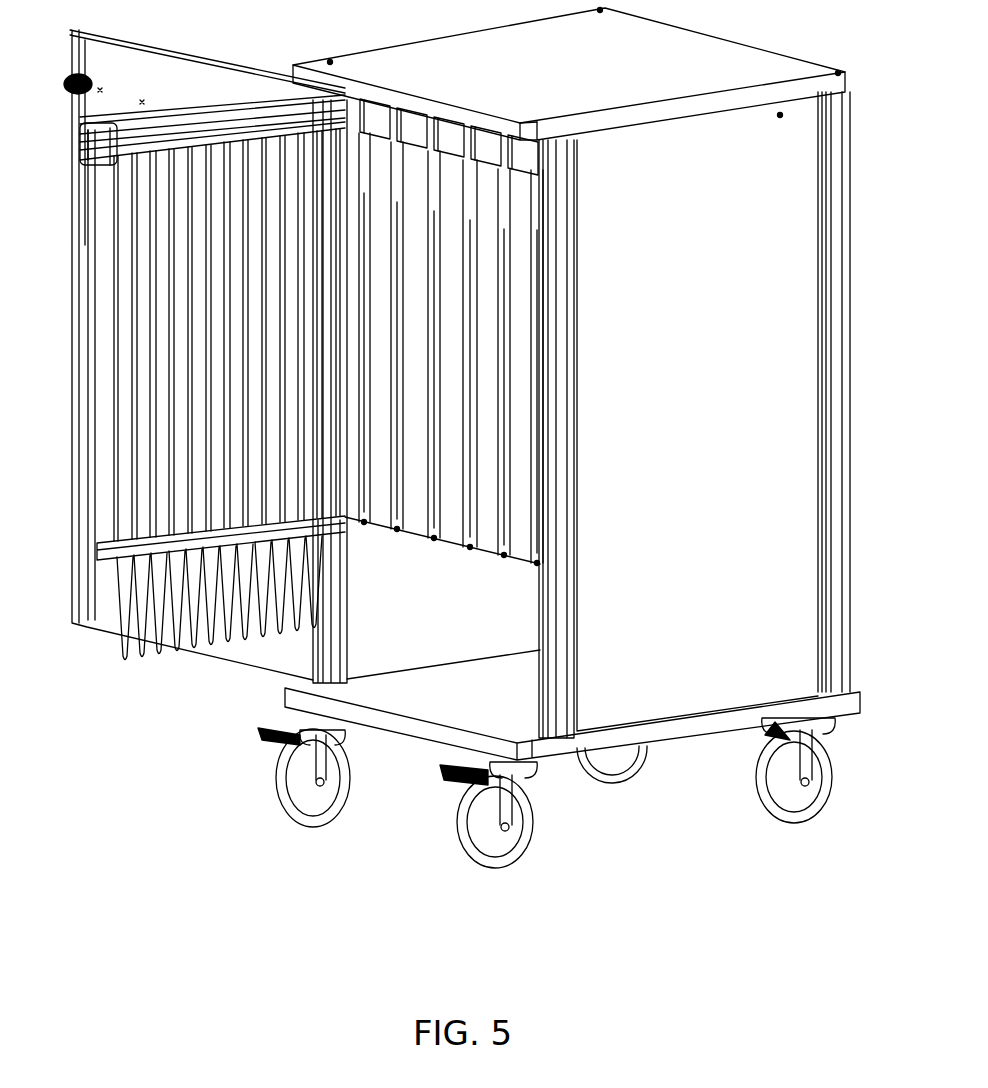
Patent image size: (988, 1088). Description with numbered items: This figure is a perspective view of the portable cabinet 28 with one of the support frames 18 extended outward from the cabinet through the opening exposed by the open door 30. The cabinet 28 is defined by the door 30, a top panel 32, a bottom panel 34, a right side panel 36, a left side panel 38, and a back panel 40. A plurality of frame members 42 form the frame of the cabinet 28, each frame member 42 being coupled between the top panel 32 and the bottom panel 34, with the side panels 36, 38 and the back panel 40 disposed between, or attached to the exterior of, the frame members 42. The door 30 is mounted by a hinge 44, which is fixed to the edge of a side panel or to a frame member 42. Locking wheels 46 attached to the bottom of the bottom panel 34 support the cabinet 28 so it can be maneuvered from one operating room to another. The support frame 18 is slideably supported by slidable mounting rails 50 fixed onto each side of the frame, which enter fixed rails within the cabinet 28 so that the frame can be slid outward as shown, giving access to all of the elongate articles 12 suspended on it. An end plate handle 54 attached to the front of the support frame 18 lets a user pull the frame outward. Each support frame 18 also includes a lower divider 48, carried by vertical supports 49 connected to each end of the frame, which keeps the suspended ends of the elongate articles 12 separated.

The elongate articles 12 is at (160, 615).
The support frames 18 is at (449, 135).
The portable cabinet 28 is at (472, 530).
The door 30 is at (192, 94).
The top panel 32 is at (597, 78).
The bottom panel 34 is at (499, 702).
The right side panel 36 is at (719, 327).
The left side panel 38 is at (427, 624).
The back panel 40 is at (866, 190).
The frame members 42 is at (838, 481).
The hinge 44 is at (313, 632).
The locking wheels 46 is at (527, 838).
The lower divider 48 is at (347, 523).
The vertical supports 49 is at (100, 343).
The slidable mounting rails 50 is at (250, 122).
The end plate handle 54 is at (105, 133).